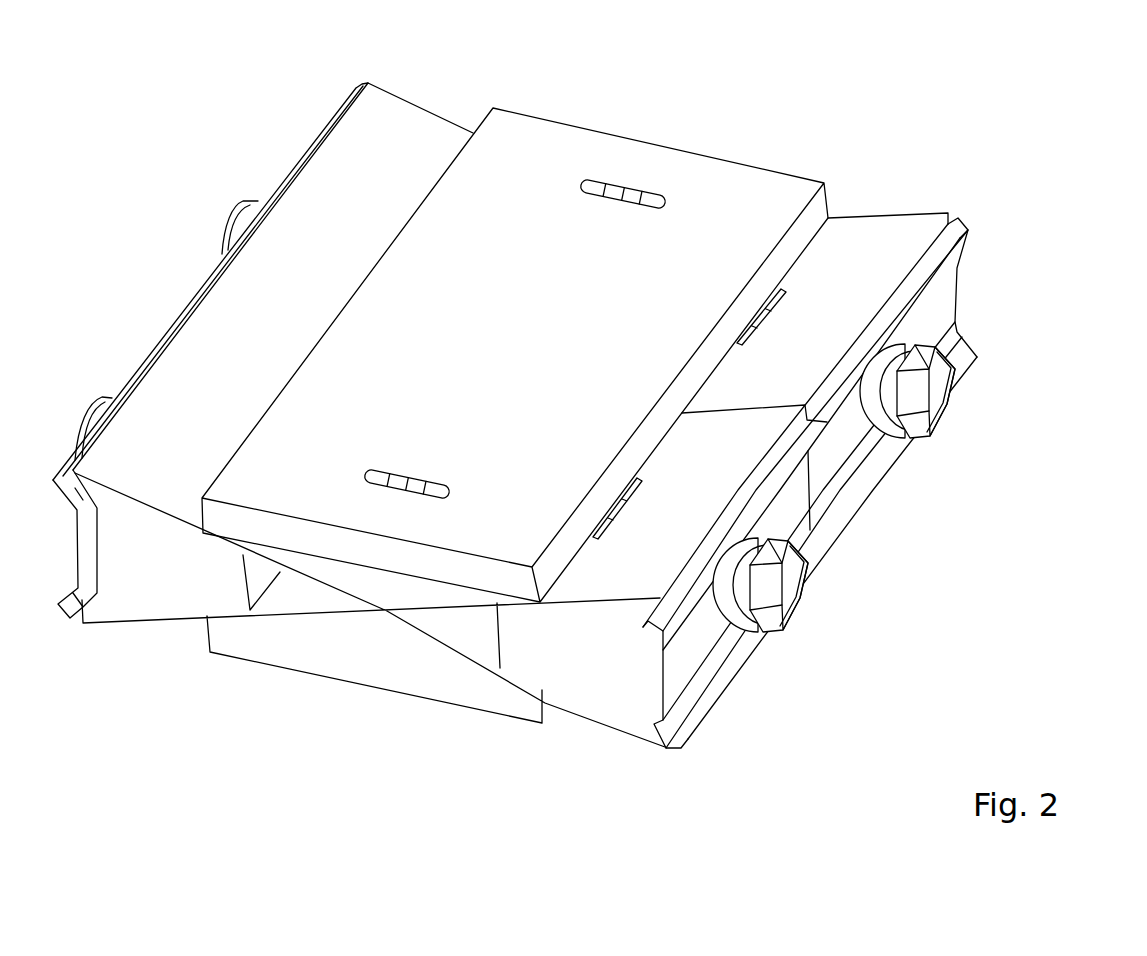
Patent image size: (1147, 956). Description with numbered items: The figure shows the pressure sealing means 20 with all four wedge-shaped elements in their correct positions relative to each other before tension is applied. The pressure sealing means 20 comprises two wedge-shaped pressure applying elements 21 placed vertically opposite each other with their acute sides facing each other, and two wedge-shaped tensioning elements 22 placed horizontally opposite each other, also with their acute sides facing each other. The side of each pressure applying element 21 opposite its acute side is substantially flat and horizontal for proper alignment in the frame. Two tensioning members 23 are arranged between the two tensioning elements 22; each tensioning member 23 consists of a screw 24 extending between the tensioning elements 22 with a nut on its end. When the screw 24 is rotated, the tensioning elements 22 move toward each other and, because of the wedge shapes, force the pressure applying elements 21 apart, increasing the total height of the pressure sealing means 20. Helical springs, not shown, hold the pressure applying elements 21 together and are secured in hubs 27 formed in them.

The pressure sealing means 20 is at (583, 429).
The pressure applying element 21 is at (535, 165).
The tensioning element 22 is at (148, 586).
The tensioning member 23 is at (966, 365).
The screw 24 is at (945, 410).
The hub 27 is at (626, 189).